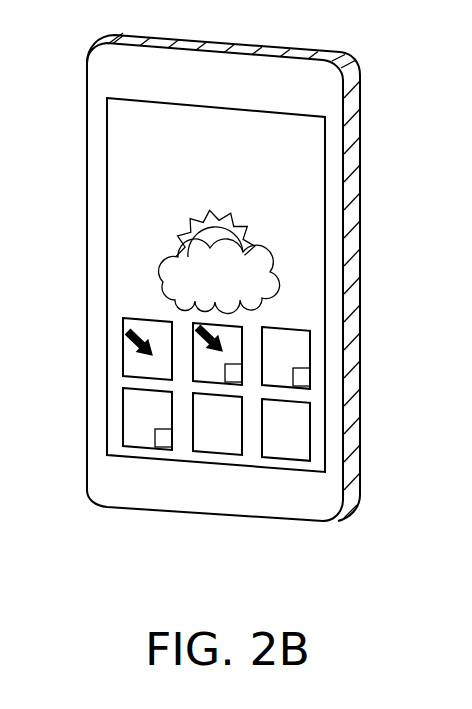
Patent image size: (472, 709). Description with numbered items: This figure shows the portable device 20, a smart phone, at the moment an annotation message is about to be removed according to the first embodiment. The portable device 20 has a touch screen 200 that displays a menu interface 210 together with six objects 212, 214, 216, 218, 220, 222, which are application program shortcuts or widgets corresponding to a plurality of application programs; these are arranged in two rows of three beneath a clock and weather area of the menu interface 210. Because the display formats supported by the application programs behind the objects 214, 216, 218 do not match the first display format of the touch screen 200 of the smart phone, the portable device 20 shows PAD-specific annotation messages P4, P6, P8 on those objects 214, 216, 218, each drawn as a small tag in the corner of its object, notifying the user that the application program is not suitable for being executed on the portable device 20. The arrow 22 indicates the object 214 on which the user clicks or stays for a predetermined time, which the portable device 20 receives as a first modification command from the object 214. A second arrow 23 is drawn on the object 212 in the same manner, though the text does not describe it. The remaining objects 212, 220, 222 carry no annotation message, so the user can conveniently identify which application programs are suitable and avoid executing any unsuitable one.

The portable device 20 is at (240, 521).
The touch screen 200 is at (327, 258).
The menu interface 210 is at (309, 141).
The arrow 22 is at (193, 322).
The drag gesture icon 23 is at (130, 359).
The object 212 is at (102, 350).
The object 214 is at (228, 349).
The object 216 is at (335, 357).
The object 218 is at (102, 425).
The object 220 is at (205, 452).
The object 222 is at (303, 447).
The annotation message P4 is at (242, 382).
The annotation message P6 is at (311, 381).
The annotation message P8 is at (155, 433).